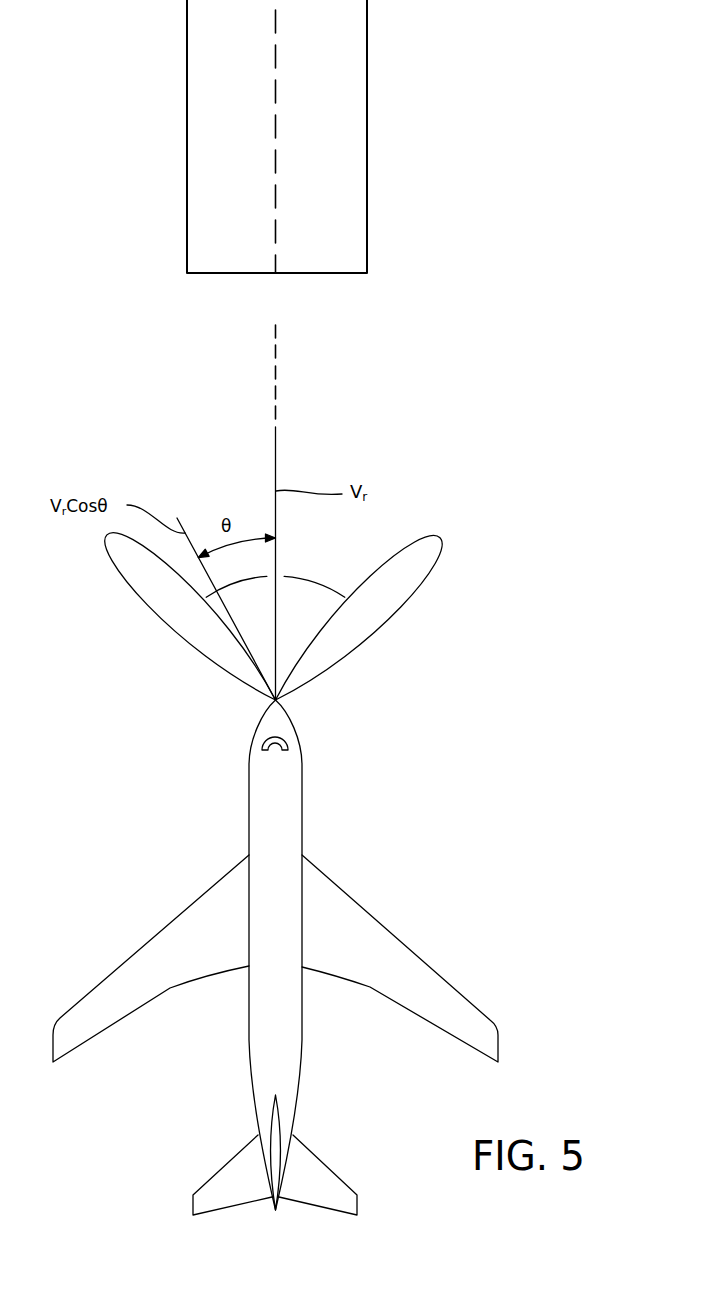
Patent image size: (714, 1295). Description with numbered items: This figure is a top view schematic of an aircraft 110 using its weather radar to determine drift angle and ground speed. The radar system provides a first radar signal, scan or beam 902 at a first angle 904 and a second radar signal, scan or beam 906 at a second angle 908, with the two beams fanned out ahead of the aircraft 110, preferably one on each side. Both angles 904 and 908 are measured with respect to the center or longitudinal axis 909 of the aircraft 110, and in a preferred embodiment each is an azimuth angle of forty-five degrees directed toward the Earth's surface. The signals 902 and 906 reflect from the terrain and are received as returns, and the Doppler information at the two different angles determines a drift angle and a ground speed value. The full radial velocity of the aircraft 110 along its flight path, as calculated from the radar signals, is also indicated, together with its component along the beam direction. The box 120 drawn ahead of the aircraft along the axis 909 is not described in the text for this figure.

The aircraft 110 is at (283, 1042).
The target 120 is at (355, 20).
The first radar signal 902 is at (123, 555).
The first angle 904 is at (236, 591).
The second radar signal 906 is at (427, 553).
The second angle 908 is at (314, 590).
The longitudinal axis 909 is at (276, 372).